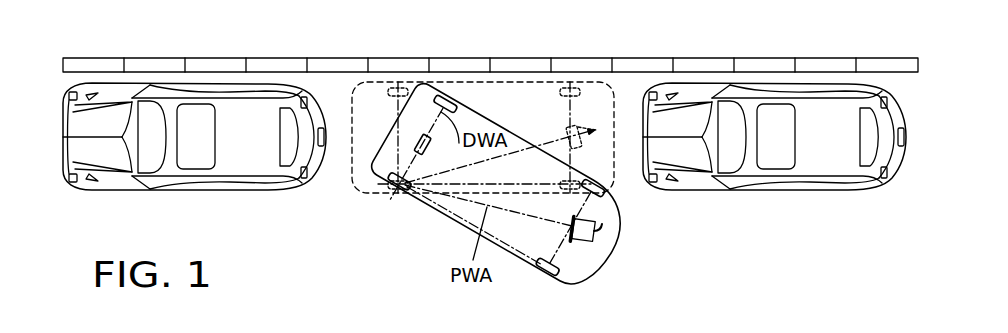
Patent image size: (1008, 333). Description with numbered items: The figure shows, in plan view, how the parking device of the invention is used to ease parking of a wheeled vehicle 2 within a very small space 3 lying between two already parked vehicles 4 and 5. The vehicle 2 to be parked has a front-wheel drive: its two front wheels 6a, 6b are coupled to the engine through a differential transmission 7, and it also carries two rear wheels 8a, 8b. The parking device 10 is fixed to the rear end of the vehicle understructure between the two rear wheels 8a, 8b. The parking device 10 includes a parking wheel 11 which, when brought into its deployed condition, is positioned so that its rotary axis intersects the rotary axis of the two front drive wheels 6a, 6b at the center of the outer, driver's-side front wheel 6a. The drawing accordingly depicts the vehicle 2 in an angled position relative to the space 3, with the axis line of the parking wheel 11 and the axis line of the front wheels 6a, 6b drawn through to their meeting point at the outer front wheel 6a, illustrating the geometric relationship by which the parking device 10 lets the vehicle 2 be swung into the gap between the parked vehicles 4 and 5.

The wheeled vehicle 2 is at (607, 252).
The very small space 3 is at (458, 80).
The already parked vehicle 4 is at (218, 190).
The already parked vehicle 5 is at (807, 193).
The front wheel 6a is at (390, 190).
The front wheel 6b is at (460, 107).
The differential transmission 7 is at (413, 143).
The rear wheel 8a is at (535, 270).
The rear wheel 8b is at (605, 183).
The parking device 10 is at (556, 247).
The parking wheel 11 is at (566, 245).